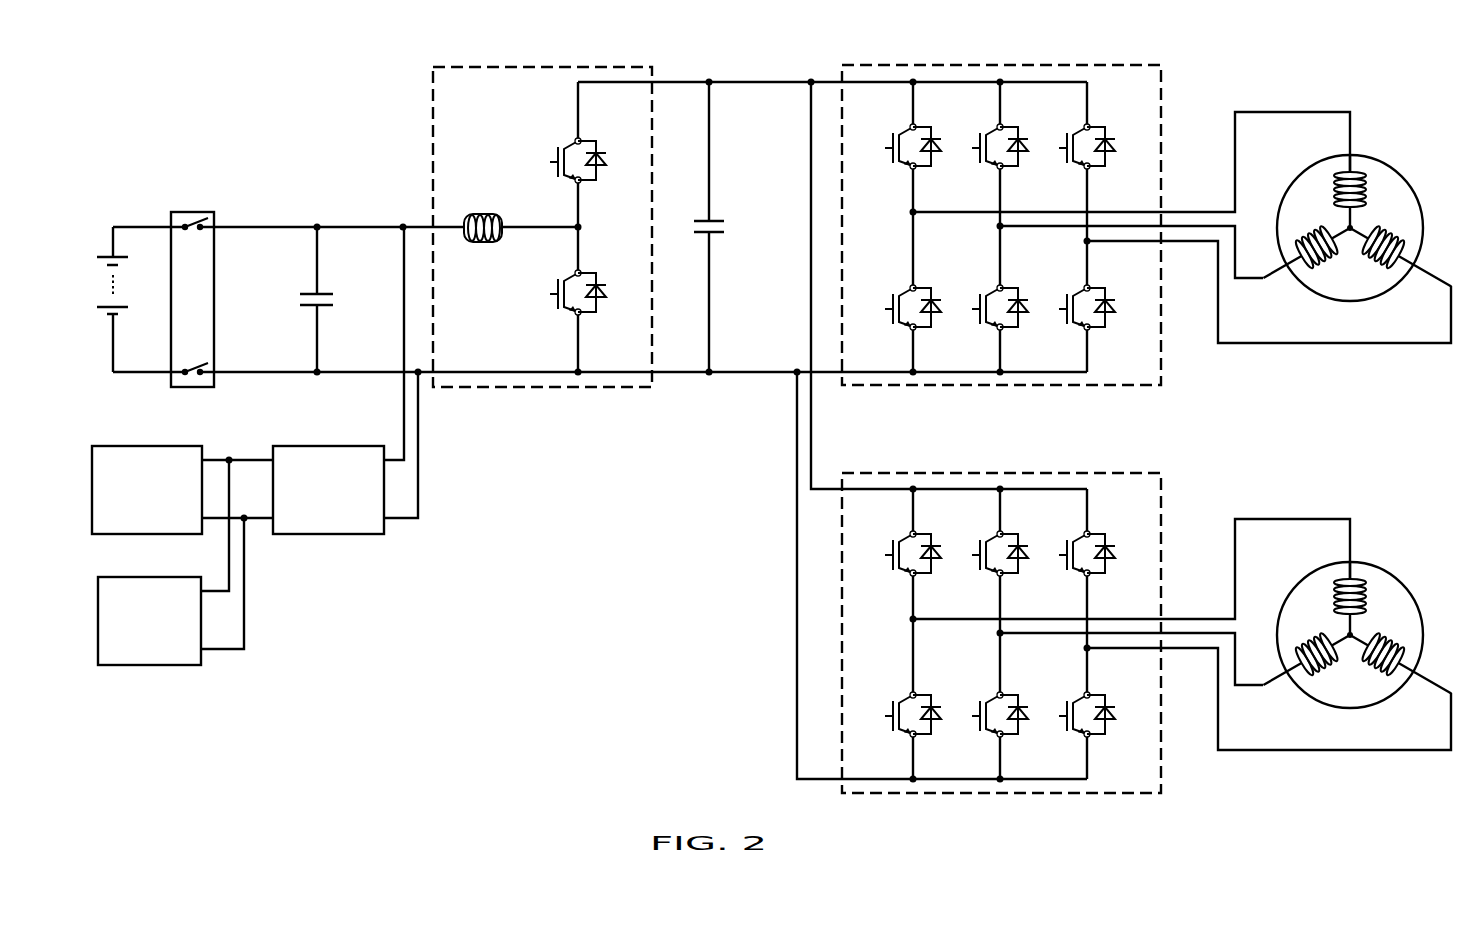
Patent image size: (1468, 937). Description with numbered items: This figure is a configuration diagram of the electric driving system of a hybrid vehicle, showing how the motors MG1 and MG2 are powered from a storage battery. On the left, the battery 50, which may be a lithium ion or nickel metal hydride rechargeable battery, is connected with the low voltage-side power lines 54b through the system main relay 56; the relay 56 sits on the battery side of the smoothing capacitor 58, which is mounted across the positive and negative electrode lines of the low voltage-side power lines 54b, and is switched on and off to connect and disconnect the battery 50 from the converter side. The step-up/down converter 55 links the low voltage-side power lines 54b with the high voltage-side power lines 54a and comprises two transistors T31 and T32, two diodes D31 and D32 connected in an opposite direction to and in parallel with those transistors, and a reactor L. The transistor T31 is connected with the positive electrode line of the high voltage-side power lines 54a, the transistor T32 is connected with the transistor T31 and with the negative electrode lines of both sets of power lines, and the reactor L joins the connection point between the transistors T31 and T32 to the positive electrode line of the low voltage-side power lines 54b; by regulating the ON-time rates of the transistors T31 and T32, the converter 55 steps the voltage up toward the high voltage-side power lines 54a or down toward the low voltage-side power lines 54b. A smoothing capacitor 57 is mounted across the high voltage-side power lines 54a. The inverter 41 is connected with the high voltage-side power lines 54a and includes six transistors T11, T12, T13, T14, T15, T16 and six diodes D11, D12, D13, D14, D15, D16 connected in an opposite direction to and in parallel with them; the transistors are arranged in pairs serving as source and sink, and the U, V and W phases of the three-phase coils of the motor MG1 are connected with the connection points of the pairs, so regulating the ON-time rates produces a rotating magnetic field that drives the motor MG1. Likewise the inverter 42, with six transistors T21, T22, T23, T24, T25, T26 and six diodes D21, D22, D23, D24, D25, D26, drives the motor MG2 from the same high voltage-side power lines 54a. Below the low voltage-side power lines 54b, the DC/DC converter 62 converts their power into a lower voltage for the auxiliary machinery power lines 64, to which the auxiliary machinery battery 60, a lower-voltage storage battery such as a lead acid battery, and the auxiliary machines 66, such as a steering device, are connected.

The battery 50 is at (103, 250).
The system main relay 56 is at (192, 212).
The low voltage-side power lines 54b is at (272, 232).
The capacitor 58 is at (323, 290).
The auxiliary machinery battery 60 is at (143, 446).
The DC/DC converter 62 is at (337, 446).
The auxiliary machinery power lines 64 is at (257, 515).
The auxiliary machines 66 is at (152, 665).
The step-up/down converter 55 is at (535, 67).
The reactor L is at (480, 215).
The transistor T31 is at (550, 154).
The transistor T32 is at (550, 286).
The diode D31 is at (600, 168).
The diode D32 is at (600, 300).
The capacitor 57 is at (720, 218).
The high voltage-side power lines 54a is at (783, 82).
The inverter 41 is at (1000, 65).
The inverter 42 is at (1000, 473).
The transistor T11 is at (885, 140).
The transistor T12 is at (972, 140).
The transistor T13 is at (1059, 140).
The transistor T14 is at (885, 301).
The transistor T15 is at (972, 301).
The transistor T16 is at (1059, 301).
The diode D11 is at (935, 154).
The diode D12 is at (1022, 154).
The diode D13 is at (1109, 154).
The diode D14 is at (935, 315).
The diode D15 is at (1022, 315).
The diode D16 is at (1109, 315).
The transistor T21 is at (885, 547).
The transistor T22 is at (972, 547).
The transistor T23 is at (1059, 547).
The transistor T24 is at (885, 708).
The transistor T25 is at (972, 708).
The transistor T26 is at (1059, 708).
The diode D21 is at (935, 561).
The diode D22 is at (1022, 561).
The diode D23 is at (1109, 561).
The diode D24 is at (935, 722).
The diode D25 is at (1022, 722).
The diode D26 is at (1109, 722).
The motor MG1 is at (1385, 158).
The motor MG2 is at (1385, 565).